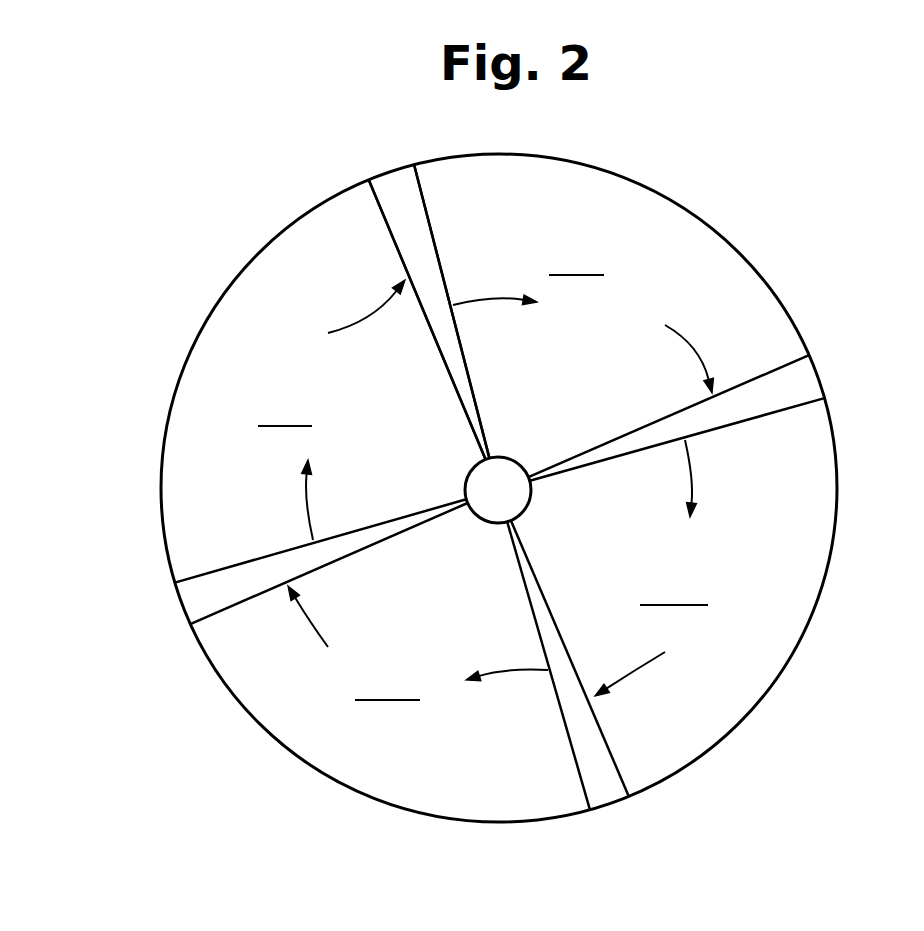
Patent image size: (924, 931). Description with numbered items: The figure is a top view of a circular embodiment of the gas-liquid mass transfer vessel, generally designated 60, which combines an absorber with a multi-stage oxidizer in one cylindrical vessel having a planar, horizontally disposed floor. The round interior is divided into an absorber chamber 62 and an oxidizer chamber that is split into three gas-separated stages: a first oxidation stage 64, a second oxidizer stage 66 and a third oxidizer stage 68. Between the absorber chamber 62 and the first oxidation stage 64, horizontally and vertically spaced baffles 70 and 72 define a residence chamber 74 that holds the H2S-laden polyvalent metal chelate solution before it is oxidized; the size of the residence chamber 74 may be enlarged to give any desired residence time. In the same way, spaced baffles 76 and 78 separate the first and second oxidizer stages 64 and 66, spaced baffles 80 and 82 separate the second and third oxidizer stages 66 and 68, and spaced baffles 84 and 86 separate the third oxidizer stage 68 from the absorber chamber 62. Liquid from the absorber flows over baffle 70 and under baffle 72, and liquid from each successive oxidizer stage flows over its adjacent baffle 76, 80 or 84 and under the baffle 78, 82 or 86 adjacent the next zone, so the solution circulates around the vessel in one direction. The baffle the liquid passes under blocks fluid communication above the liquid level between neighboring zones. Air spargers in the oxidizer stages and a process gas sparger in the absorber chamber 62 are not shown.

The gas-liquid mass transfer vessel of circular design 60 is at (828, 239).
The absorber chamber 62 is at (207, 350).
The first oxidation stage 64 is at (684, 243).
The second oxidizer stage 66 is at (808, 597).
The third oxidizer stage 68 is at (330, 758).
The baffle 70 is at (380, 208).
The baffle 72 is at (423, 190).
The residence chamber 74 is at (407, 182).
The baffle 76 is at (778, 363).
The baffle 78 is at (807, 403).
The baffle 80 is at (627, 777).
The baffle 82 is at (588, 792).
The baffle 84 is at (208, 622).
The baffle 86 is at (203, 570).